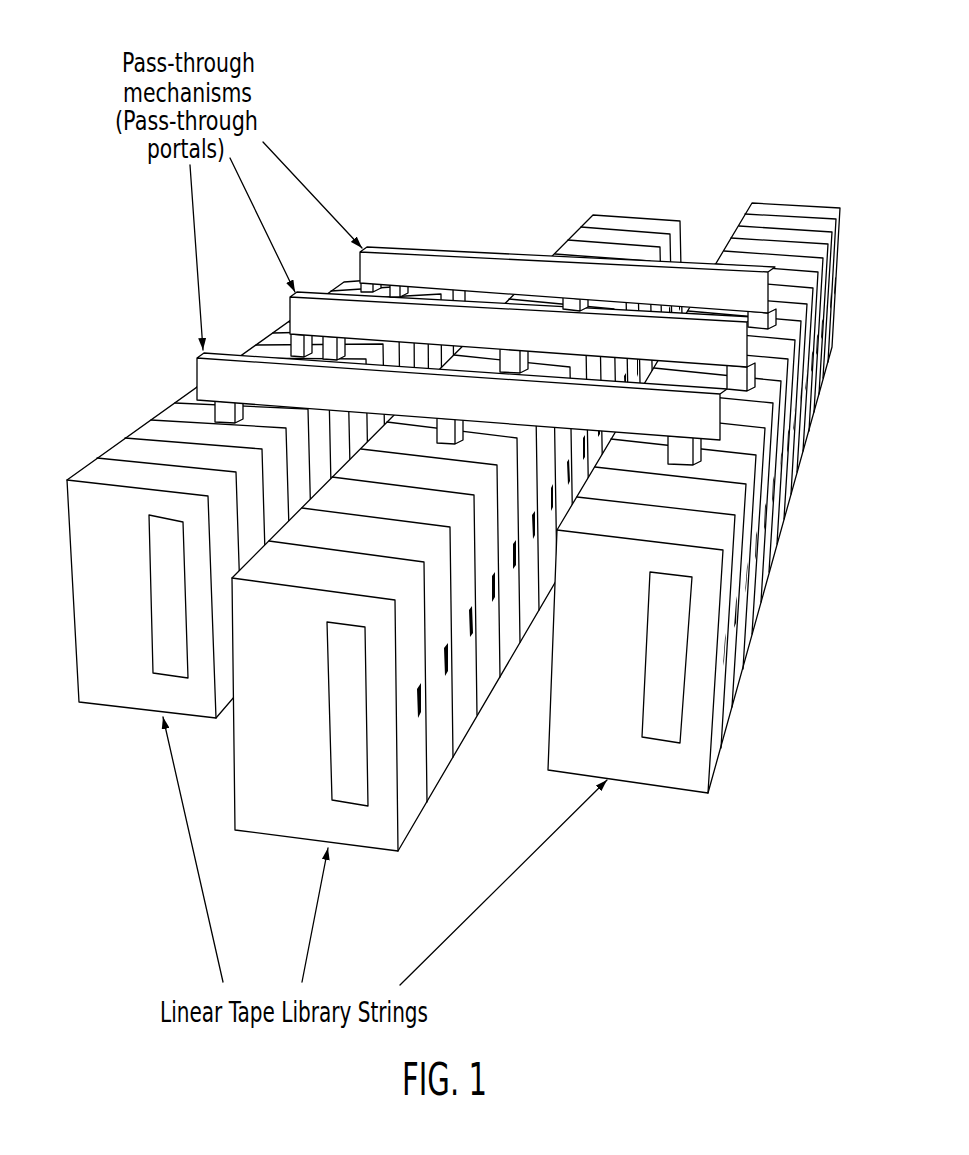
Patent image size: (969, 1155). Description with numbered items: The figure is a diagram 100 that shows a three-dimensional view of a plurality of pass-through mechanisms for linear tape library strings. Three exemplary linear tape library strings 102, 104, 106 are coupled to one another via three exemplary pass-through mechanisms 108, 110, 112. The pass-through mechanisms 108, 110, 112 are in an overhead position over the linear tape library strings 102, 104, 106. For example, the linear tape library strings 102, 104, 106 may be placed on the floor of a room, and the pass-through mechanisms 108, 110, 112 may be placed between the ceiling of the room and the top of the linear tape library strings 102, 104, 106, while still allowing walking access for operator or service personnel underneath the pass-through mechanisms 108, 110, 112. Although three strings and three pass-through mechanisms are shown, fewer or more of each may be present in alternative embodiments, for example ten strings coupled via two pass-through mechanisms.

The diagram 100 is at (453, 454).
The linear tape library string 102 is at (117, 712).
The linear tape library string 104 is at (272, 840).
The linear tape library string 106 is at (648, 787).
The pass-through mechanism 108 is at (397, 243).
The pass-through mechanism 110 is at (307, 290).
The pass-through mechanism 112 is at (237, 348).